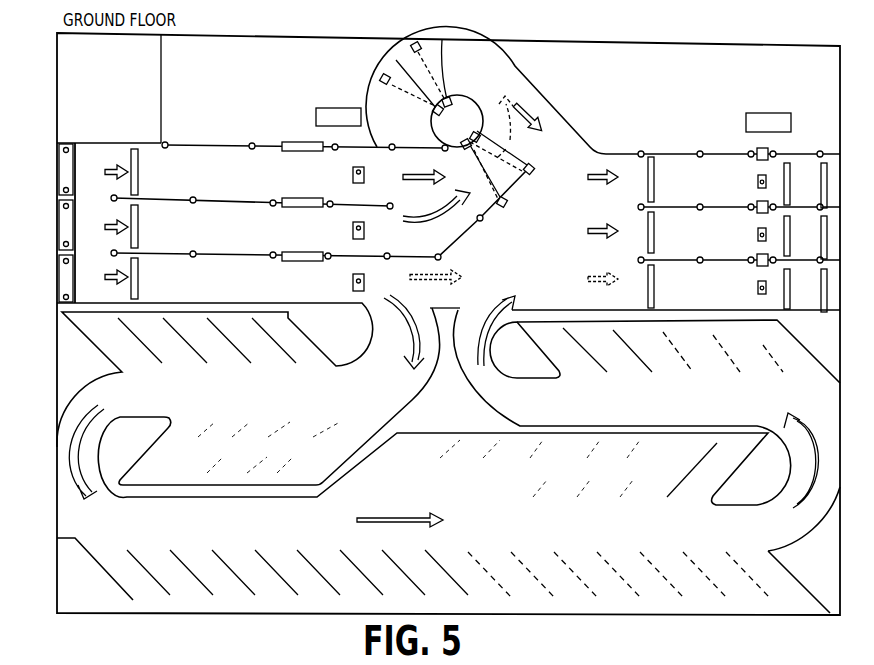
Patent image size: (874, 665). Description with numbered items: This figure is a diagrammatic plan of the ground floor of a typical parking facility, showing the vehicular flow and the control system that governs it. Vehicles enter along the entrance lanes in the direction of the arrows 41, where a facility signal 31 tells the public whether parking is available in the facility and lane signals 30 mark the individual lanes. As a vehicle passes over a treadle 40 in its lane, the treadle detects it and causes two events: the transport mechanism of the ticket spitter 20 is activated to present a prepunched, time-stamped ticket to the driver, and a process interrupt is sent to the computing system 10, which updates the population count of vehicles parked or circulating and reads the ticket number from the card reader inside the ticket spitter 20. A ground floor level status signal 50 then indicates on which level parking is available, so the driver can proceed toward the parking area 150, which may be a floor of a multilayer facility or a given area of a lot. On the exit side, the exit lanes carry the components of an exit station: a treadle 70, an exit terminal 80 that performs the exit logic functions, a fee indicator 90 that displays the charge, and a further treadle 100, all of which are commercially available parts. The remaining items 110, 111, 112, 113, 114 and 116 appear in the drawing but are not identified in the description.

The computing system 10 is at (322, 112).
The ticket spitter 20 is at (288, 142).
The lane signals 30 is at (59, 153).
The facility signal 31 is at (58, 178).
The treadle 40 is at (142, 228).
The arrows 41 is at (105, 229).
The ground floor level status signal 50 is at (353, 178).
The treadle 70 is at (654, 197).
The exit terminal 80 is at (757, 151).
The fee indicator 90 is at (758, 180).
The treadle 100 is at (821, 198).
The turntable 110 is at (486, 86).
The turntable station 111 is at (530, 156).
The turntable station 112 is at (387, 74).
The turntable station 113 is at (508, 203).
The exit direction arrow 114 is at (538, 95).
The rotation direction arrow 116 is at (417, 222).
The parking area 150 is at (262, 378).